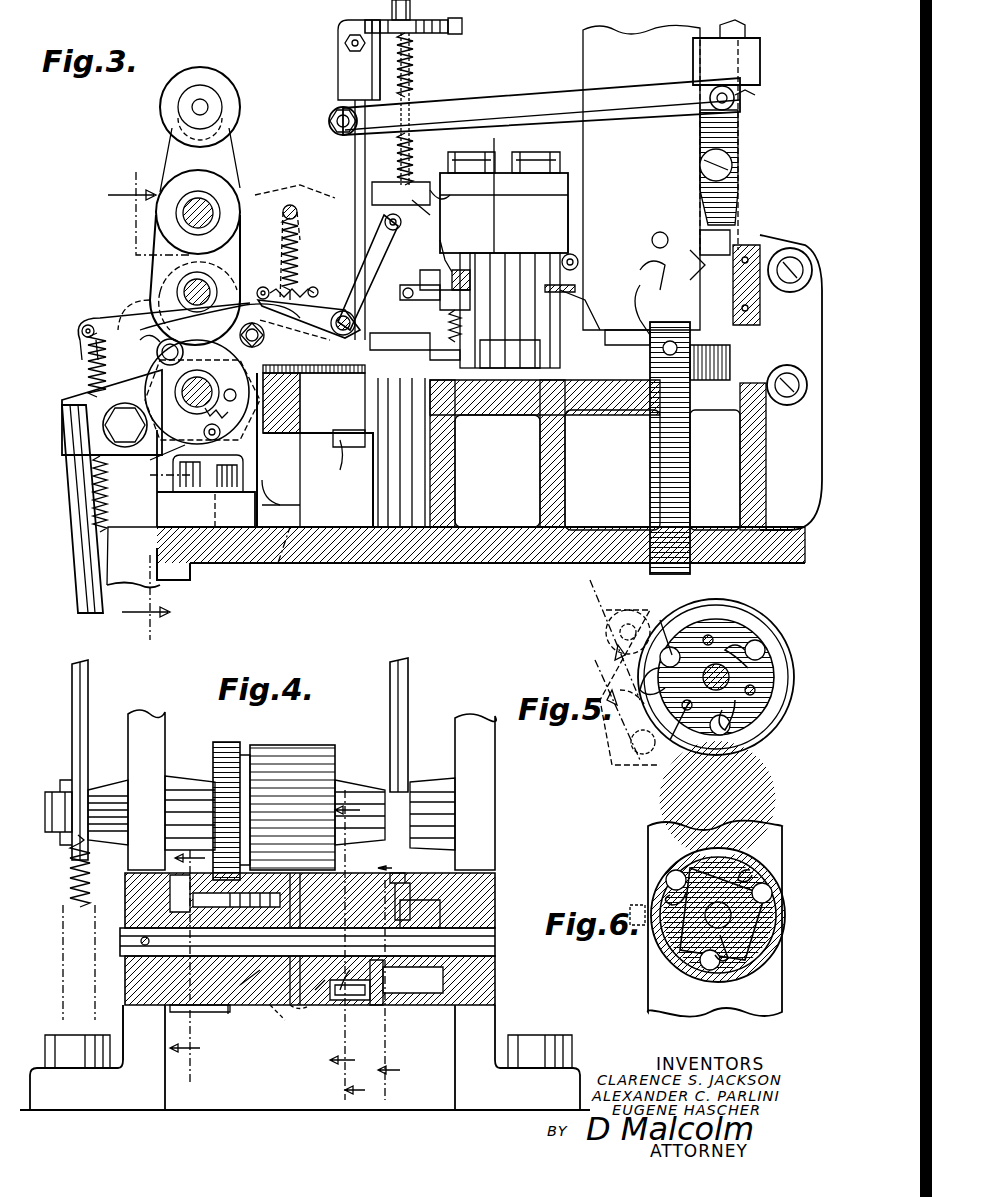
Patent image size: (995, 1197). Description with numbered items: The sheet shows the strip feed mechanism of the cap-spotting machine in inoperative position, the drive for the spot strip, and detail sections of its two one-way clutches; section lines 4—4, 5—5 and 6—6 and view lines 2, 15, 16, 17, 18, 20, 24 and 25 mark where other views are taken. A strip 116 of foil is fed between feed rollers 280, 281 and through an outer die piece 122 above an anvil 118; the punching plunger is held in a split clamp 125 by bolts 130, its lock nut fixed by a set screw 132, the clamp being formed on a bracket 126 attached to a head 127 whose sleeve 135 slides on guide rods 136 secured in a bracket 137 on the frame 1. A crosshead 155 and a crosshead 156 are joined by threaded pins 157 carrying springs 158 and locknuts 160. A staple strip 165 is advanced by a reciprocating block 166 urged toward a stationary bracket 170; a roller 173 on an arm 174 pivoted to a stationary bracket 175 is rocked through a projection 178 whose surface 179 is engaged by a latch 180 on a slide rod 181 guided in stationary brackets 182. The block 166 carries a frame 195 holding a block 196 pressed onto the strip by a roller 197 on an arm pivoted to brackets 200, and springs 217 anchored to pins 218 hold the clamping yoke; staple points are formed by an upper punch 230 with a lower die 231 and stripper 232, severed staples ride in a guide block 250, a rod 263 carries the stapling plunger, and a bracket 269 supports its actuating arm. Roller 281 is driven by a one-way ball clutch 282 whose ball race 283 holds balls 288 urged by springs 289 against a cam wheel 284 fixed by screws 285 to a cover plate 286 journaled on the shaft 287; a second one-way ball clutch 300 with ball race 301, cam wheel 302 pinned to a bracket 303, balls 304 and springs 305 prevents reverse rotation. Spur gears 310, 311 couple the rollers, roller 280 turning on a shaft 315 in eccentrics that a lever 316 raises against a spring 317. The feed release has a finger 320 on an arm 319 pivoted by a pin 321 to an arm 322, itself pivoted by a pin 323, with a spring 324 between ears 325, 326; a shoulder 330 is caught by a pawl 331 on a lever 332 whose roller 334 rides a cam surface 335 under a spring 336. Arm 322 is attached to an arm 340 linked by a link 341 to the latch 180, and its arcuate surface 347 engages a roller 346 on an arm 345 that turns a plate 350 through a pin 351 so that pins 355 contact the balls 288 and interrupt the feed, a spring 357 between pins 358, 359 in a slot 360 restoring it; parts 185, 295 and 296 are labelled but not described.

In FIG. 3, the frame base 1 is at (326, 545).
In FIG. 4, the frame base 1 is at (205, 1113).
In FIG. 3, the column 2 is at (370, 405).
In FIG. 3, the section line 4- 4 is at (150, 405).
In FIG. 4, the section line 5- 5 is at (266, 947).
In FIG. 5, the section line 5- 5 is at (615, 670).
In FIG. 3, the section line 6- 6 is at (298, 575).
In FIG. 4, the section line 6- 6 is at (185, 1047).
In FIG. 3, the plate 15 is at (300, 405).
In FIG. 3, the bracket 16 is at (318, 450).
In FIG. 3, the bracket arm 17 is at (355, 425).
In FIG. 3, the support 18 is at (331, 480).
In FIG. 3, the lug 20 is at (352, 456).
In FIG. 4, the section line 24- 24 is at (409, 979).
In FIG. 4, the section line 25- 25 is at (355, 939).
In FIG. 3, the gear 116 is at (732, 360).
In FIG. 4, the gear 116 is at (272, 870).
In FIG. 3, the frame wall 118 is at (408, 456).
In FIG. 3, the bracket 122 is at (400, 340).
In FIG. 3, the post 125 is at (344, 65).
In FIG. 3, the block 126 is at (494, 138).
In FIG. 3, the block side 127 is at (544, 226).
In FIG. 3, the pivot 130 is at (348, 30).
In FIG. 3, the nut 132 is at (462, 28).
In FIG. 3, the solenoid 135 is at (462, 18).
In FIG. 3, the plunger 136 is at (510, 348).
In FIG. 3, the frame wall 137 is at (548, 430).
In FIG. 3, the spring 155 is at (416, 180).
In FIG. 3, the cap 156 is at (428, 20).
In FIG. 3, the rod 157 is at (413, 90).
In FIG. 3, the spring 158 is at (413, 66).
In FIG. 3, the cross bar 160 is at (372, 193).
In FIG. 3, the bolt 165 is at (760, 312).
In FIG. 3, the lug 166 is at (630, 342).
In FIG. 3, the opening 170 is at (455, 380).
In FIG. 3, the opening 173 is at (588, 400).
In FIG. 3, the latch 174 is at (637, 275).
In FIG. 3, the plate 175 is at (635, 45).
In FIG. 3, the stop 178 is at (690, 235).
In FIG. 3, the pin 179 is at (664, 232).
In FIG. 3, the post 180 is at (738, 190).
In FIG. 3, the bolt 181 is at (740, 24).
In FIG. 3, the bracket 182 is at (760, 72).
In FIG. 3, the rack 185 is at (668, 436).
In FIG. 3, the link 195 is at (565, 305).
In FIG. 3, the pivot 196 is at (580, 256).
In FIG. 3, the pawl 197 is at (560, 285).
In FIG. 3, the lever 200 is at (640, 310).
In FIG. 3, the collar 217 is at (462, 300).
In FIG. 3, the spring 218 is at (462, 322).
In FIG. 3, the arm 230 is at (453, 250).
In FIG. 3, the block 231 is at (445, 280).
In FIG. 3, the rod 232 is at (440, 262).
In FIG. 3, the bracket 250 is at (410, 307).
In FIG. 3, the rod 263 is at (392, 8).
In FIG. 3, the base edge 269 is at (125, 590).
In FIG. 3, the drum 280 is at (160, 262).
In FIG. 4, the drum 280 is at (298, 760).
In FIG. 4, the ring 281 is at (300, 1005).
In FIG. 5, the ring 281 is at (680, 750).
In FIG. 4, the ring 282 is at (335, 1005).
In FIG. 5, the disc 283 is at (770, 718).
In FIG. 4, the hub 284 is at (285, 1030).
In FIG. 5, the hub 284 is at (640, 710).
In FIG. 4, the roller 285 is at (310, 1050).
In FIG. 5, the roller 285 is at (688, 640).
In FIG. 3, the spring 286 is at (90, 425).
In FIG. 4, the spring 286 is at (340, 1040).
In FIG. 5, the spring 286 is at (606, 628).
In FIG. 3, the shaft 287 is at (190, 430).
In FIG. 4, the shaft 287 is at (470, 938).
In FIG. 5, the shaft 287 is at (725, 670).
In FIG. 6, the shaft 287 is at (715, 920).
In FIG. 5, the spring 288 is at (650, 665).
In FIG. 5, the screw 289 is at (770, 690).
In FIG. 3, the bracket 295 is at (70, 402).
In FIG. 3, the bar 296 is at (80, 503).
In FIG. 4, the clutch 300 is at (208, 1040).
In FIG. 6, the clutch 300 is at (660, 846).
In FIG. 6, the ring 301 is at (690, 968).
In FIG. 4, the cam 302 is at (170, 1050).
In FIG. 6, the cam 302 is at (672, 930).
In FIG. 3, the lever 303 is at (252, 190).
In FIG. 4, the lever 303 is at (140, 742).
In FIG. 6, the lever 303 is at (655, 1002).
In FIG. 6, the roller 304 is at (670, 876).
In FIG. 6, the spring 305 is at (668, 898).
In FIG. 4, the gear 310 is at (226, 745).
In FIG. 4, the collar 311 is at (240, 1012).
In FIG. 3, the hub 315 is at (190, 284).
In FIG. 4, the hub 315 is at (395, 800).
In FIG. 3, the pulley 316 is at (210, 100).
In FIG. 4, the pulley 316 is at (80, 688).
In FIG. 3, the spring 317 is at (85, 372).
In FIG. 4, the spring 317 is at (70, 882).
In FIG. 3, the plate 319 is at (314, 381).
In FIG. 3, the stop 320 is at (432, 358).
In FIG. 3, the pivot 321 is at (278, 335).
In FIG. 3, the arm 322 is at (200, 318).
In FIG. 4, the arm 322 is at (395, 825).
In FIG. 3, the pivot 323 is at (348, 312).
In FIG. 3, the eyelet 324 is at (276, 250).
In FIG. 3, the pivot 325 is at (211, 221).
In FIG. 3, the spring 326 is at (306, 259).
In FIG. 3, the pivot 330 is at (204, 284).
In FIG. 3, the spring 331 is at (287, 308).
In FIG. 3, the link 332 is at (369, 272).
In FIG. 3, the cap 334 is at (420, 187).
In FIG. 3, the adjusting screw 335 is at (420, 230).
In FIG. 3, the link 336 is at (295, 187).
In FIG. 3, the lever 340 is at (328, 128).
In FIG. 4, the lever 340 is at (400, 688).
In FIG. 3, the bar 341 is at (540, 108).
In FIG. 3, the gear 345 is at (202, 392).
In FIG. 4, the gear 345 is at (410, 905).
In FIG. 3, the arm 346 is at (82, 331).
In FIG. 4, the arm 346 is at (410, 880).
In FIG. 3, the arm 347 is at (150, 320).
In FIG. 3, the pivot 350 is at (140, 340).
In FIG. 4, the pivot 350 is at (385, 1005).
In FIG. 3, the lug 351 is at (262, 452).
In FIG. 4, the pawl 355 is at (370, 990).
In FIG. 5, the pawl 355 is at (675, 630).
In FIG. 3, the screw 357 is at (258, 498).
In FIG. 3, the lug 358 is at (262, 490).
In FIG. 3, the axis 359 is at (151, 482).
In FIG. 3, the bracket 360 is at (206, 478).